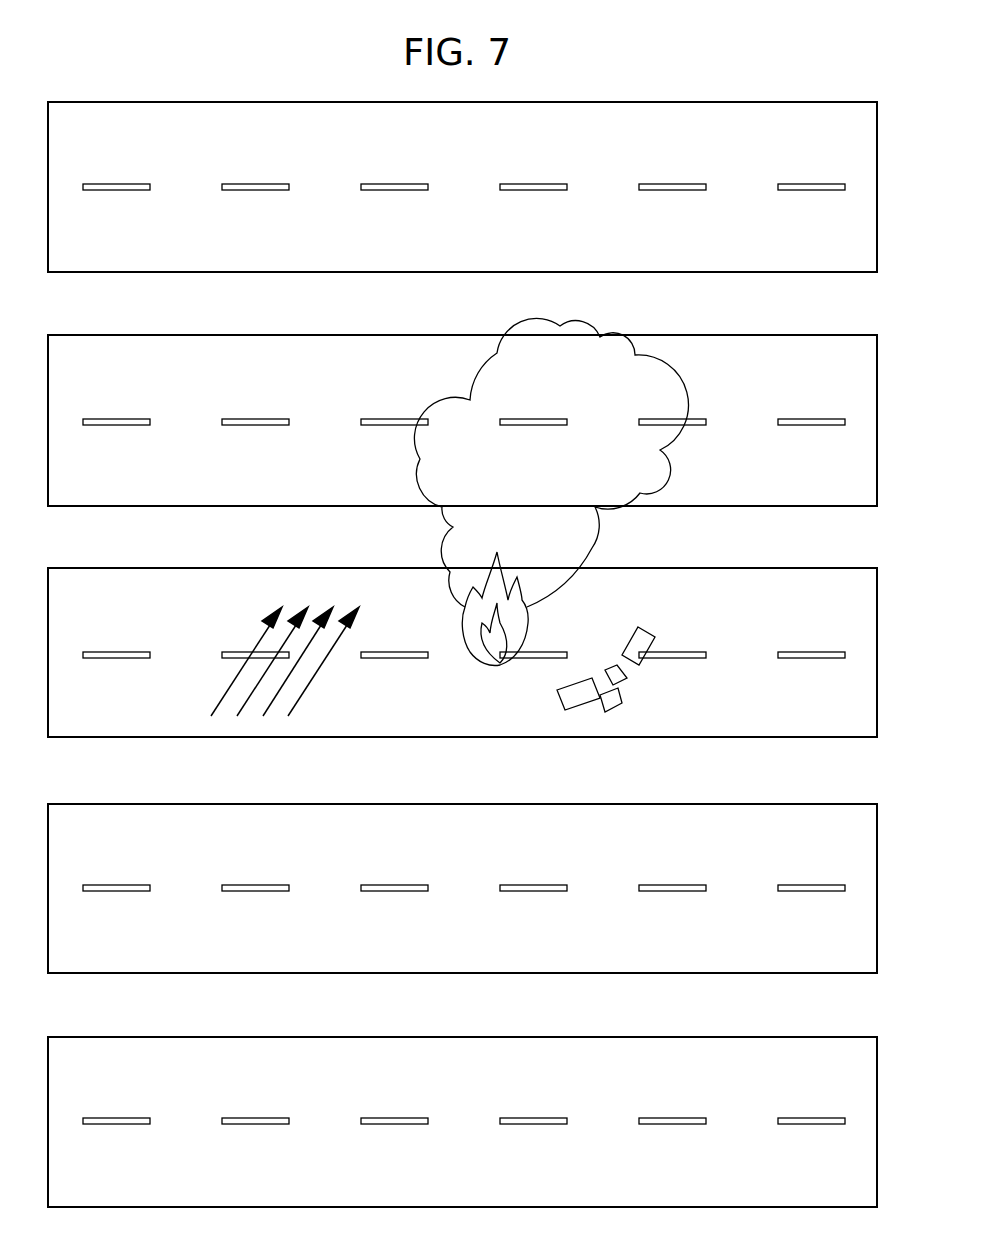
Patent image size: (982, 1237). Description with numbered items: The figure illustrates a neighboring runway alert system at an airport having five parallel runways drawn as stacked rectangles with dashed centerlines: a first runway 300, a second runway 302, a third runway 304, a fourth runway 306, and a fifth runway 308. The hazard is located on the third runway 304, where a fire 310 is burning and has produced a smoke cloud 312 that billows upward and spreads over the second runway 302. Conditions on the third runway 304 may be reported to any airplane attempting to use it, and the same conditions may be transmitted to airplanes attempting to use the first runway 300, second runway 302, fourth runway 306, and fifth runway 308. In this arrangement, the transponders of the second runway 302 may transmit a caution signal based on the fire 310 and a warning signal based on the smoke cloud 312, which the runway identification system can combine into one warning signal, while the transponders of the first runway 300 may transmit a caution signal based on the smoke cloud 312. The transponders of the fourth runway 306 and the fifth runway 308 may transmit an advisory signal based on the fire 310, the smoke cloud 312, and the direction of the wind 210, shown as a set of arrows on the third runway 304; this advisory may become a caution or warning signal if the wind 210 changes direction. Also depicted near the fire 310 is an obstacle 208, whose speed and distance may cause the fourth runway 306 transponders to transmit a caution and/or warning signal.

The first runway 300 is at (91, 254).
The second runway 302 is at (138, 365).
The third runway 304 is at (163, 598).
The fourth runway 306 is at (715, 837).
The fifth runway 308 is at (722, 1062).
The smoke cloud 312 is at (655, 460).
The fire 310 is at (500, 664).
The obstacle 208 is at (641, 668).
The wind 210 is at (307, 687).